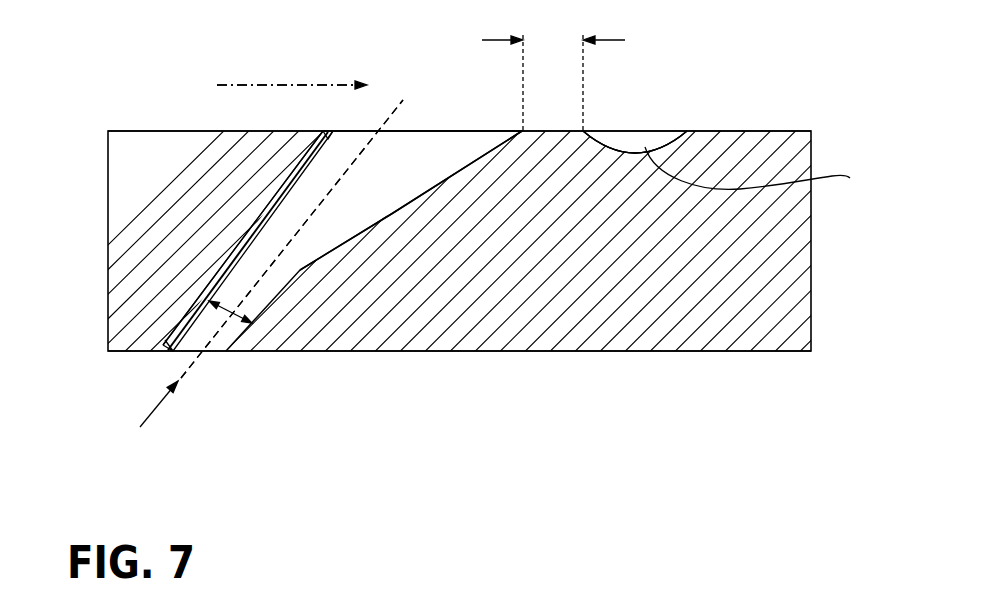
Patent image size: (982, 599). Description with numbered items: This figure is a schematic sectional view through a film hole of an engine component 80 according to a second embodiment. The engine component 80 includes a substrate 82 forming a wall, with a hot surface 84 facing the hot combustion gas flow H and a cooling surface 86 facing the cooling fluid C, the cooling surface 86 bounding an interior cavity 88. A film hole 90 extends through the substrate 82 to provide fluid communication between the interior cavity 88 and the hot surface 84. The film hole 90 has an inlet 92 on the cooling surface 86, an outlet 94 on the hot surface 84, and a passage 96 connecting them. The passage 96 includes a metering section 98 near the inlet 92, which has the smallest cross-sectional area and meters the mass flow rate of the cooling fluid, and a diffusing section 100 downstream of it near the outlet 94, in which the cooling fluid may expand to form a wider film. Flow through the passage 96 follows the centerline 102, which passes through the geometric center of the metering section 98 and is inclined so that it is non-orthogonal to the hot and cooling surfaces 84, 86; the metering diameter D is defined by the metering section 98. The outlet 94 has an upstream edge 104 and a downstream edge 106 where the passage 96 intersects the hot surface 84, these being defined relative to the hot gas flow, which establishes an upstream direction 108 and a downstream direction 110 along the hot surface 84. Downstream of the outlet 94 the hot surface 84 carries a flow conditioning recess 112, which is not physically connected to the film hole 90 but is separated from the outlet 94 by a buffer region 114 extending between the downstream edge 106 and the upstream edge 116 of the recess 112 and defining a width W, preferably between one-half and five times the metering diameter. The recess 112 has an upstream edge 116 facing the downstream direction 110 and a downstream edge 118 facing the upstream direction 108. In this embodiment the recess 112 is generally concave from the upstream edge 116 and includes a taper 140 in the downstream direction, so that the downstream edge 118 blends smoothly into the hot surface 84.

The engine component 80 is at (113, 118).
The substrate 82 is at (638, 253).
The hot surface 84 is at (163, 131).
The cooling surface 86 is at (680, 352).
The interior cavity 88 is at (177, 436).
The film hole 90 is at (398, 219).
The inlet 92 is at (177, 352).
The outlet 94 is at (438, 131).
The passage 96 is at (335, 223).
The metering section 98 is at (193, 302).
The diffusing section 100 is at (277, 193).
The centerline 102 is at (215, 338).
The upstream edge 104 is at (334, 131).
The downstream edge 106 is at (521, 131).
The upstream direction 108 is at (275, 73).
The downstream direction 110 is at (299, 75).
The recess 112 is at (669, 101).
The buffer region 114 is at (552, 131).
The upstream edge 116 is at (585, 131).
The downstream edge 118 is at (684, 131).
The taper 140 is at (759, 176).